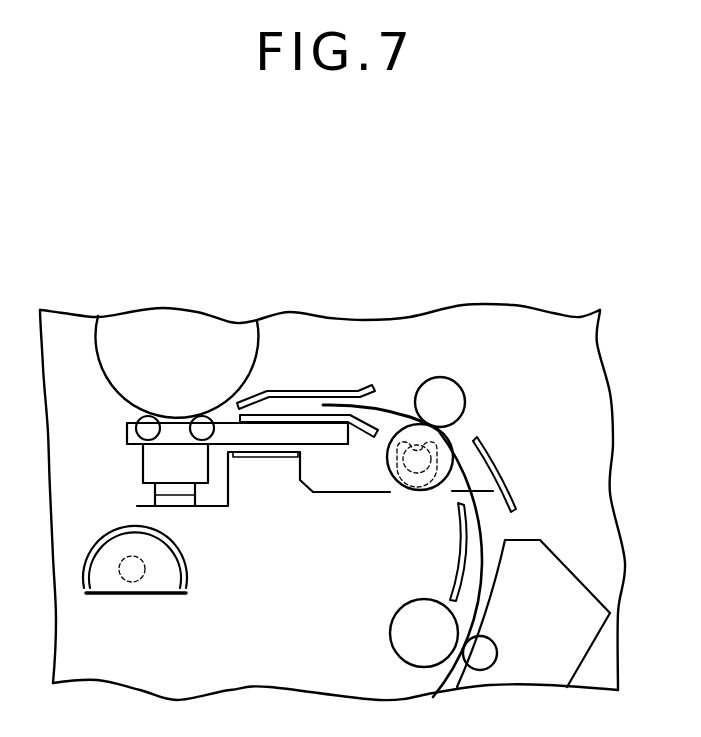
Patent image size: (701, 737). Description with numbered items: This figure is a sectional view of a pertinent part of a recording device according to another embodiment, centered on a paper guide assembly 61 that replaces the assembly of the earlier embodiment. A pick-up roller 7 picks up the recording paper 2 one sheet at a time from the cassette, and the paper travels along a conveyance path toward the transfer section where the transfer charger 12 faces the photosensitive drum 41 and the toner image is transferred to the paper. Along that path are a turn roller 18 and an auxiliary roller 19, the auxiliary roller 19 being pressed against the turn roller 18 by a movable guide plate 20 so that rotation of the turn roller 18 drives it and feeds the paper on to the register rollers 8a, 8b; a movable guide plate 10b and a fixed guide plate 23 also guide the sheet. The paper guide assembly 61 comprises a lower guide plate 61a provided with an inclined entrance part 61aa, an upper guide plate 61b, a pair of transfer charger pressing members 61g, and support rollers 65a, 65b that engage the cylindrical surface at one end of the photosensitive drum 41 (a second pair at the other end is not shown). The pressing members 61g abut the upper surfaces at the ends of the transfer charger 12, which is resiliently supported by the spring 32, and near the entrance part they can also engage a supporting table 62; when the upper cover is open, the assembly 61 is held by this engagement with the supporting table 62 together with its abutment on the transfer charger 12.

The paper guide assembly 61 is at (388, 328).
The photosensitive drum 41 is at (97, 342).
The support roller 65a is at (200, 417).
The support roller 65b is at (140, 421).
The transfer charger 12 is at (143, 465).
The supporting table 62 is at (260, 456).
The spring 32 is at (203, 494).
The pick-up roller 7 is at (183, 596).
The lower guide plate 61a is at (291, 413).
The inclined entrance part 61aa is at (378, 428).
The upper guide plate 61b is at (333, 386).
The transfer charger pressing member 61g is at (320, 445).
The register roller 8a is at (410, 490).
The register roller 8b is at (452, 392).
The movable guide plate 10b is at (498, 453).
The recording paper 2 is at (490, 528).
The movable guide plate 20 is at (575, 582).
The fixed guide plate 23 is at (456, 573).
The turn roller 18 is at (393, 634).
The auxiliary roller 19 is at (488, 648).